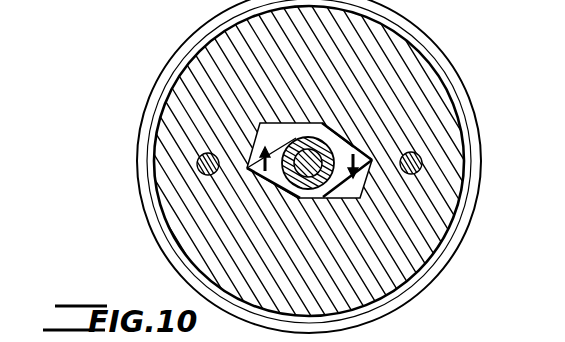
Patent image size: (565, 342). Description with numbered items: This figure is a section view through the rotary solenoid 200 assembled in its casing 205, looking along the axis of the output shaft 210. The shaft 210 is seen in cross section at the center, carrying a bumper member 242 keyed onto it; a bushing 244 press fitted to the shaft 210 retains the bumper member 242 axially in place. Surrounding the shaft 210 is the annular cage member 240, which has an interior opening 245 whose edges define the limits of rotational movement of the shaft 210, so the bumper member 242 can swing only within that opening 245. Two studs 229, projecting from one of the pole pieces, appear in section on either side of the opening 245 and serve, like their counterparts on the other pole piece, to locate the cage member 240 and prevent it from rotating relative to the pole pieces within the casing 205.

The rotary solenoid 200 is at (536, 341).
The casing 205 is at (200, 33).
The annular cage member 240 is at (408, 63).
The studs 229 is at (197, 170).
The interior opening 245 is at (357, 187).
The bushing 244 is at (325, 140).
The bumper member 242 is at (352, 142).
The output shaft 210 is at (302, 153).